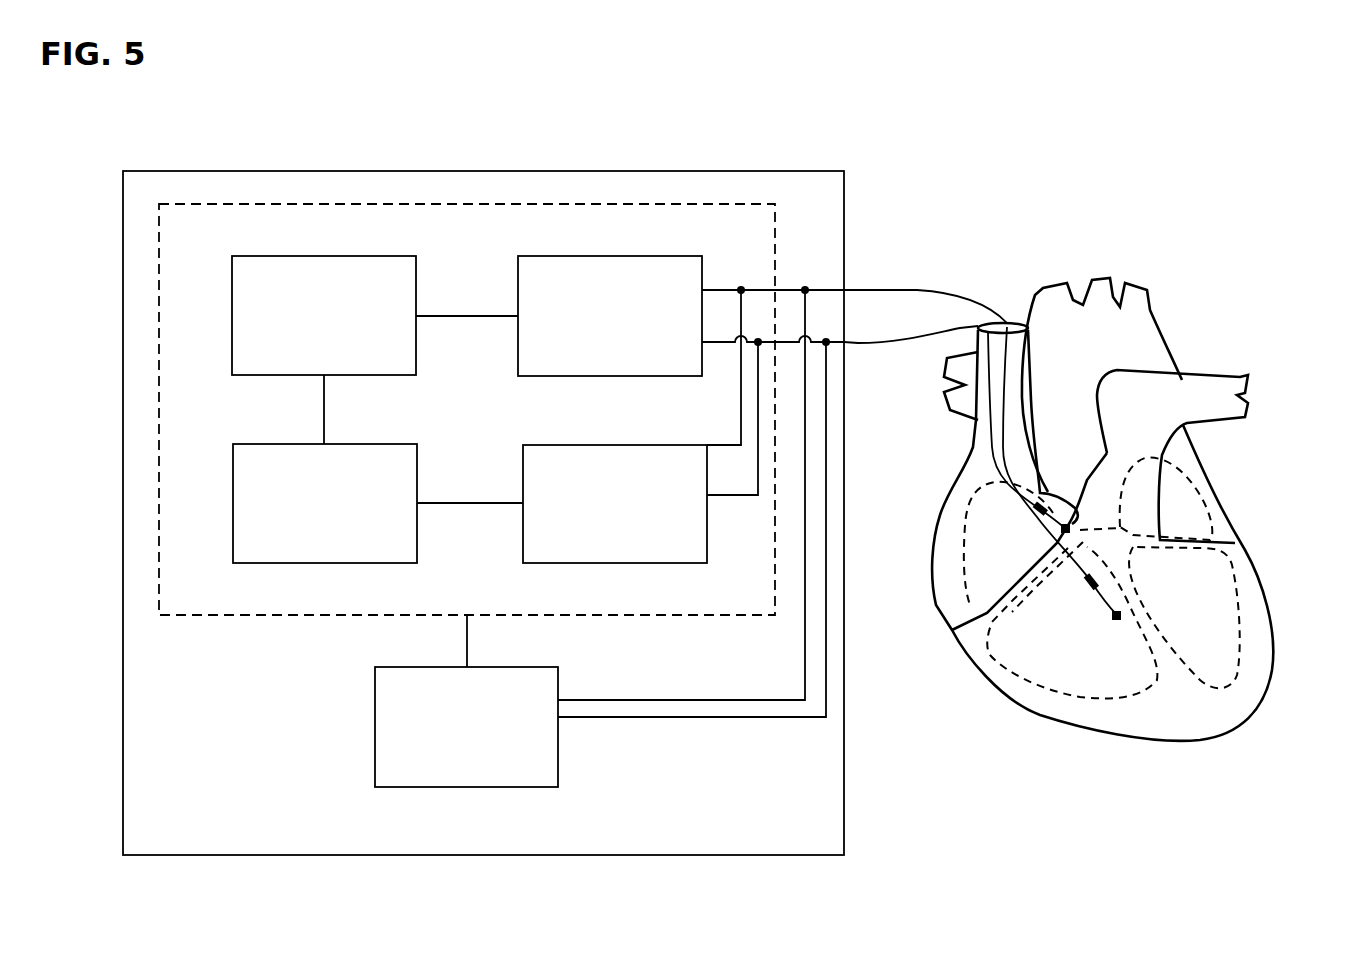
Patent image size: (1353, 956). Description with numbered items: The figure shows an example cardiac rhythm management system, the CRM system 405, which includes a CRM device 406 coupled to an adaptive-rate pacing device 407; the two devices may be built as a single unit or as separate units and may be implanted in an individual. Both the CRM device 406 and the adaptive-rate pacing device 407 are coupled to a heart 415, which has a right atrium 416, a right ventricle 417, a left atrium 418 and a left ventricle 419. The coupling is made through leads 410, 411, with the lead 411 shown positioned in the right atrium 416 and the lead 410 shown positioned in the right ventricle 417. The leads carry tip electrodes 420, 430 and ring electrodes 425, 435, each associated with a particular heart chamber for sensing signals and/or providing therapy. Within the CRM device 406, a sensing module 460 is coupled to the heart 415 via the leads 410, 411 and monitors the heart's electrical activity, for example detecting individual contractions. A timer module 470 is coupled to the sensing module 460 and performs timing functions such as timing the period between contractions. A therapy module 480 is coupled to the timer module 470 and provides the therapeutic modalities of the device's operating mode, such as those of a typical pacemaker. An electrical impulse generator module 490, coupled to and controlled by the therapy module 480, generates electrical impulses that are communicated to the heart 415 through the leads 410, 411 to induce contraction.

The CRM system 405 is at (603, 171).
The CRM device 406 is at (318, 204).
The adaptive-rate pacing device 407 is at (533, 667).
The lead 410 is at (855, 343).
The lead 411 is at (863, 290).
The heart 415 is at (1157, 223).
The right atrium 416 is at (980, 582).
The right ventricle 417 is at (1027, 660).
The left atrium 418 is at (1187, 512).
The left ventricle 419 is at (1222, 657).
The tip electrode 420 is at (1114, 616).
The ring electrode 425 is at (1089, 585).
The tip electrode 430 is at (1069, 529).
The ring electrode 435 is at (1043, 507).
The sensing module 460 is at (663, 256).
The timer module 470 is at (363, 256).
The therapy module 480 is at (363, 444).
The electrical impulse generator module 490 is at (663, 445).